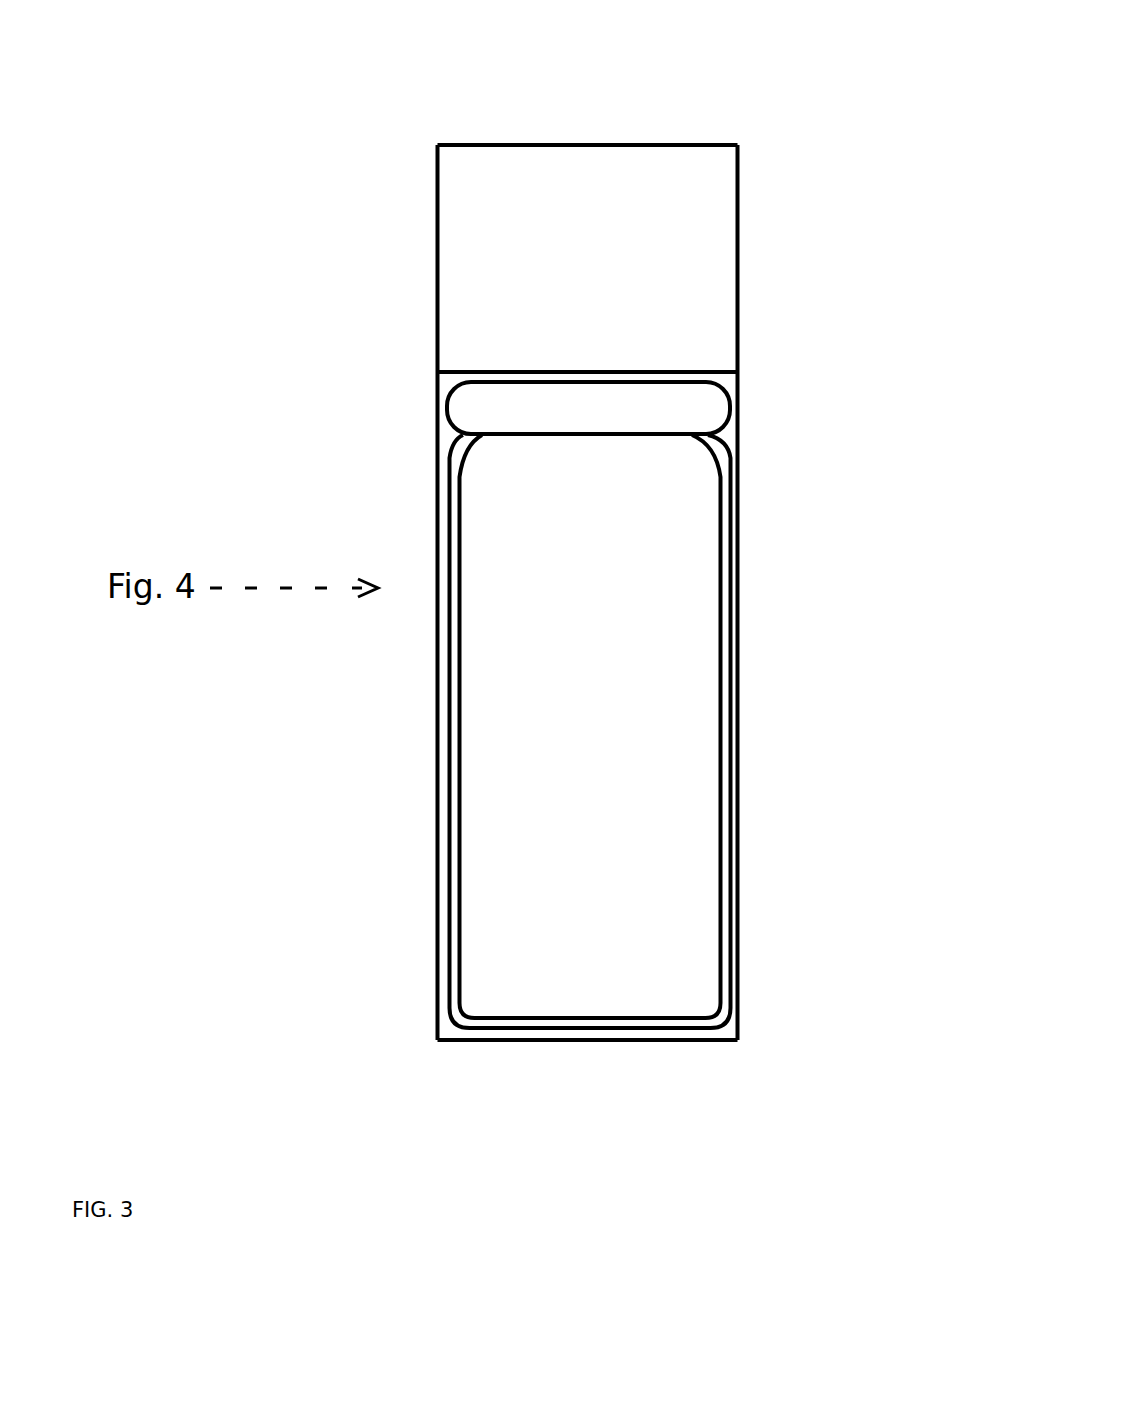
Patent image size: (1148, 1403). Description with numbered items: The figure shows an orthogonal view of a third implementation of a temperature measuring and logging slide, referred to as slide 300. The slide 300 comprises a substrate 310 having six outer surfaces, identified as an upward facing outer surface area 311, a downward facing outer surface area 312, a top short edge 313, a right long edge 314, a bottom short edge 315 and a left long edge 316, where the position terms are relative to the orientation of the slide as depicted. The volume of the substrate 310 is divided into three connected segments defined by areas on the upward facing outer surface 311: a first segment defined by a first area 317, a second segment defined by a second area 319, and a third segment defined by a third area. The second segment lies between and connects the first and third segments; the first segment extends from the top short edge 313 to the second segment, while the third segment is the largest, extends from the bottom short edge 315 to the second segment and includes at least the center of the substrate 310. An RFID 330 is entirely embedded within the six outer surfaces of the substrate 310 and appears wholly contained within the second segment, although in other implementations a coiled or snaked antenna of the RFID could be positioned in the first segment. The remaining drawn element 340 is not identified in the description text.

The slide 300 is at (335, 160).
The substrate 310 is at (437, 325).
The upward facing outer surface area 311 is at (615, 247).
The downward facing outer surface area 312 is at (615, 327).
The top short edge 313 is at (583, 145).
The right long edge 314 is at (737, 765).
The bottom short edge 315 is at (568, 1043).
The left long edge 316 is at (437, 765).
The first area 317 is at (708, 322).
The second area 319 is at (705, 690).
The RFID 330 is at (470, 408).
The outer frame 340 is at (450, 482).